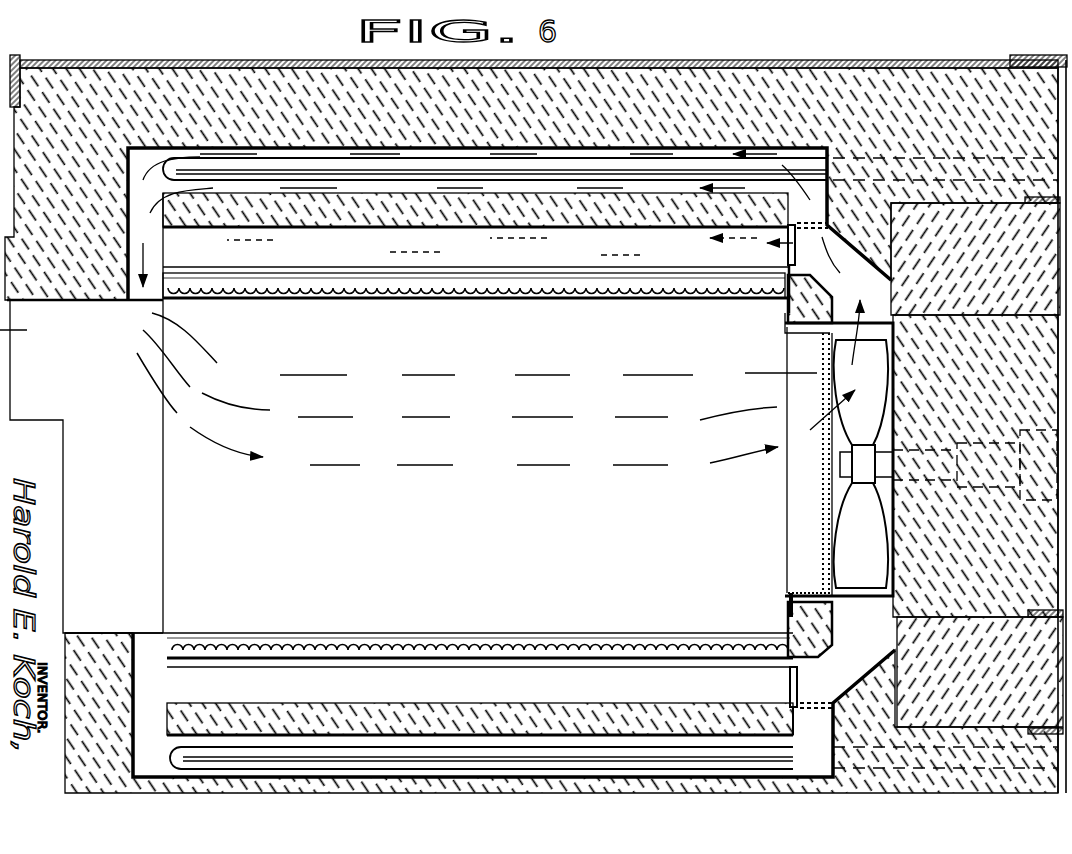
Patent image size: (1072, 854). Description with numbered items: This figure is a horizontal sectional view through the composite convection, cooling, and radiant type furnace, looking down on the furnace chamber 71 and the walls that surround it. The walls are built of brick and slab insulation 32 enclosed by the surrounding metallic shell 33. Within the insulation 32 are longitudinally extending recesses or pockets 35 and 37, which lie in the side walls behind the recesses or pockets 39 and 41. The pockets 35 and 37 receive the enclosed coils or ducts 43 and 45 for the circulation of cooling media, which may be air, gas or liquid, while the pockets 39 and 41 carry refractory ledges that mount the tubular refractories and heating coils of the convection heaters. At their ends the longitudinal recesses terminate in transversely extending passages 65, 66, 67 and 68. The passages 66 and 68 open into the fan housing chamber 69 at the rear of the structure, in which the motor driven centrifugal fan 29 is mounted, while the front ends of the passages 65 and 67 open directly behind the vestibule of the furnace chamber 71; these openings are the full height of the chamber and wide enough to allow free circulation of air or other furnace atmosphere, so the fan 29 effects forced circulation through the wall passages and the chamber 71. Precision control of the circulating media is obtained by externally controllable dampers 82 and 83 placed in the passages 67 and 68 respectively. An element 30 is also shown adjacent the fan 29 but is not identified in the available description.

The motor driven fan 29 is at (852, 547).
The filter screen 30 is at (817, 510).
The brick and slab insulation 32 is at (743, 78).
The metallic shell 33 is at (630, 63).
The recess or pocket 35 is at (300, 155).
The recess or pocket 37 is at (537, 773).
The recess or pocket 39 is at (478, 250).
The recess or pocket 41 is at (478, 684).
The enclosed coil or duct 43 is at (182, 167).
The enclosed coil or duct 45 is at (430, 760).
The transversely extending passage 65 is at (140, 233).
The transversely extending passage 66 is at (820, 205).
The transversely extending passage 67 is at (150, 653).
The transversely extending passage 68 is at (807, 722).
The fan housing chamber 69 is at (790, 597).
The furnace chamber 71 is at (483, 550).
The damper 82 is at (790, 255).
The damper 83 is at (797, 690).